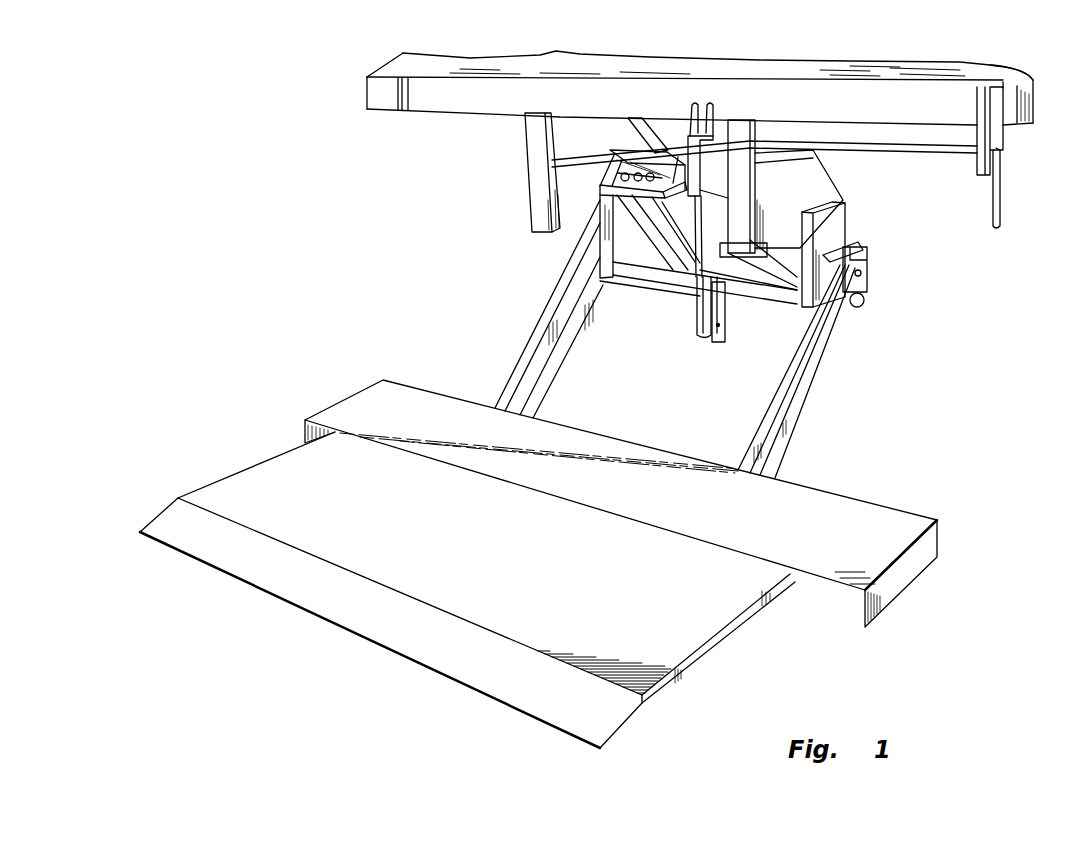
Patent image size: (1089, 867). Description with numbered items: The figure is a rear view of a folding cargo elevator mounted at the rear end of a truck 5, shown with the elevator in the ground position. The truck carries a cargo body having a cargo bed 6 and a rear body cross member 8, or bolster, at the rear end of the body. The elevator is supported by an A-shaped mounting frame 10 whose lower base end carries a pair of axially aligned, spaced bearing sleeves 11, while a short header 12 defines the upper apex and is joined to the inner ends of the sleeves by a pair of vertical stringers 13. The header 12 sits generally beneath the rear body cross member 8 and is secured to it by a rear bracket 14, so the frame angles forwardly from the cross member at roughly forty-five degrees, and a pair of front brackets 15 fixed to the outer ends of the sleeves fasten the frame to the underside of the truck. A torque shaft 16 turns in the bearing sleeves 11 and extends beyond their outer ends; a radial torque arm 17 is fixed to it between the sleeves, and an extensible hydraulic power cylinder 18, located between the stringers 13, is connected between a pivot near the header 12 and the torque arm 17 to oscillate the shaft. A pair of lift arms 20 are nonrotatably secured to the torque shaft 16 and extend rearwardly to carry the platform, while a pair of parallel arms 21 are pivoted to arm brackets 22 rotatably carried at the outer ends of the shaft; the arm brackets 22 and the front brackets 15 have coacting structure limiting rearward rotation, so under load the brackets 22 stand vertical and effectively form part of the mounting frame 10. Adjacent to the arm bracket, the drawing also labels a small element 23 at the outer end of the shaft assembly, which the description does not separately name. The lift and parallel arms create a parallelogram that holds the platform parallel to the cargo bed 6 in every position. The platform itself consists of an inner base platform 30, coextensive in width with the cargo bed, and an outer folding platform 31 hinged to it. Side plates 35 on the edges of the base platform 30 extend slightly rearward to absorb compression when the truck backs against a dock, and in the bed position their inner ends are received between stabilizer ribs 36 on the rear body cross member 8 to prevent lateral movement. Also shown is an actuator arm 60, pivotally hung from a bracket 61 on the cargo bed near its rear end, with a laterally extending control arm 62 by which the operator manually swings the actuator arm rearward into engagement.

The truck 5 is at (527, 184).
The cargo bed 6 is at (858, 68).
The rear body cross member 8 is at (474, 90).
The mounting frame 10 is at (642, 287).
The bearing sleeves 11 is at (780, 293).
The header 12 is at (611, 193).
The vertical stringers 13 is at (722, 273).
The rear bracket 14 is at (628, 128).
The front brackets 15 is at (836, 220).
The torque shaft 16 is at (863, 303).
The torque arm 17 is at (717, 330).
The hydraulic power cylinder 18 is at (673, 268).
The lift arms 20 is at (563, 363).
The parallel arms 21 is at (553, 313).
The arm brackets 22 is at (868, 270).
The tongue plate 23 is at (843, 247).
The base platform 30 is at (335, 404).
The folding platform 31 is at (220, 479).
The side plates 35 is at (907, 575).
The stabilizer ribs 36 is at (396, 98).
The actuator arm 60 is at (689, 138).
The bracket 61 is at (713, 112).
The control arm 62 is at (999, 200).